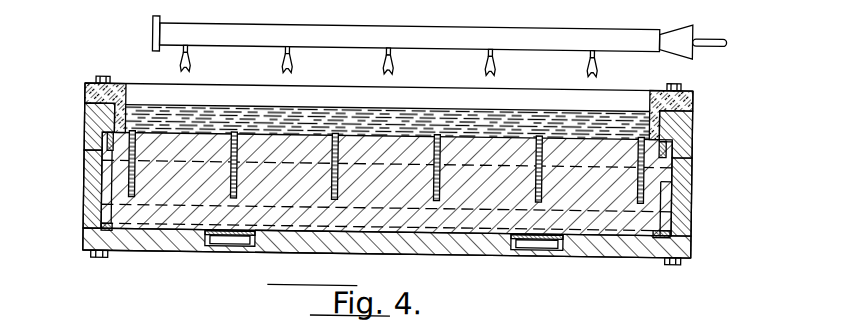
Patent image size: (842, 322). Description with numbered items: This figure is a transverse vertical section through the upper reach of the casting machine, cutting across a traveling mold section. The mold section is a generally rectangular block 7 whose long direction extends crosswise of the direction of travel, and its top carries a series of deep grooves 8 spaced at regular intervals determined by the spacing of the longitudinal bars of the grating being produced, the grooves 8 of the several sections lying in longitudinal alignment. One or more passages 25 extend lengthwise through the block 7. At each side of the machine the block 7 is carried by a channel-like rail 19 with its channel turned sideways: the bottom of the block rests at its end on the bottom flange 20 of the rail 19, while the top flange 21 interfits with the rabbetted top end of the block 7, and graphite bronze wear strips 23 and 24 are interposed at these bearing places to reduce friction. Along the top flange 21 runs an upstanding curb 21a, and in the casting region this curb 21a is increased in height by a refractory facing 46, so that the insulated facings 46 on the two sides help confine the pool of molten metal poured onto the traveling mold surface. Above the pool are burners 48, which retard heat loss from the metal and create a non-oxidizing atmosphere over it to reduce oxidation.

The rectangular block 7 is at (604, 196).
The deep grooves 8 is at (226, 183).
The channel-like rails 19 is at (693, 204).
The bottom flanges 20 is at (665, 258).
The top flange 21 is at (693, 149).
The upstanding curb 21a is at (674, 116).
The graphite bronze wear strip 23 is at (667, 145).
The graphite bronze wear strip 24 is at (658, 228).
The passages 25 is at (248, 247).
The refractory facing 46 is at (85, 91).
The burners 48 is at (447, 45).